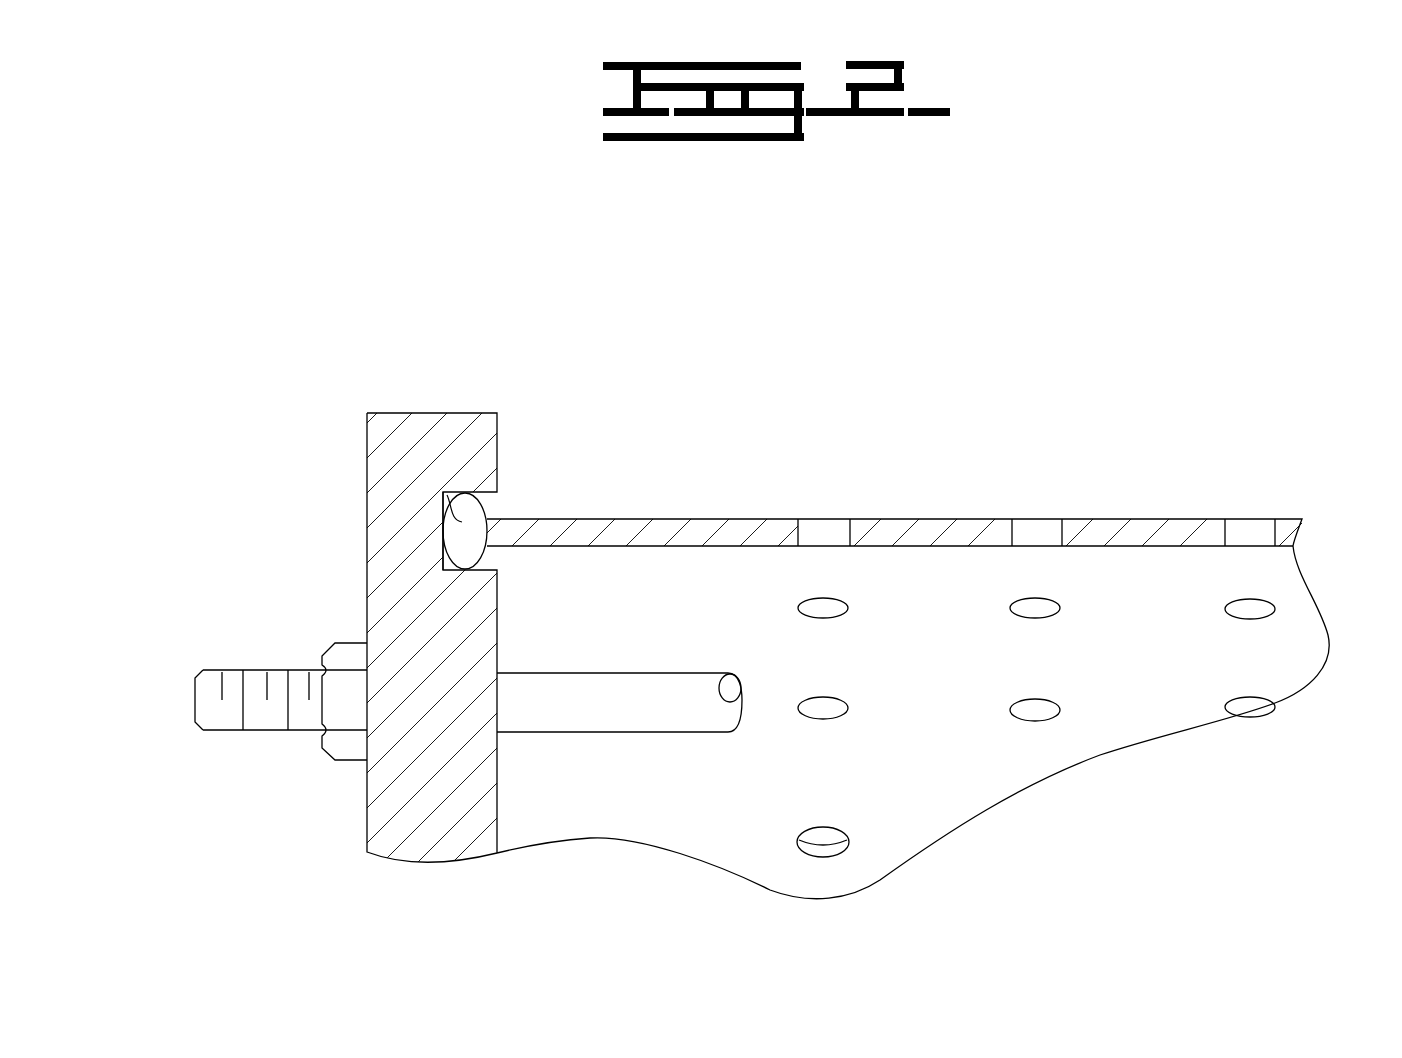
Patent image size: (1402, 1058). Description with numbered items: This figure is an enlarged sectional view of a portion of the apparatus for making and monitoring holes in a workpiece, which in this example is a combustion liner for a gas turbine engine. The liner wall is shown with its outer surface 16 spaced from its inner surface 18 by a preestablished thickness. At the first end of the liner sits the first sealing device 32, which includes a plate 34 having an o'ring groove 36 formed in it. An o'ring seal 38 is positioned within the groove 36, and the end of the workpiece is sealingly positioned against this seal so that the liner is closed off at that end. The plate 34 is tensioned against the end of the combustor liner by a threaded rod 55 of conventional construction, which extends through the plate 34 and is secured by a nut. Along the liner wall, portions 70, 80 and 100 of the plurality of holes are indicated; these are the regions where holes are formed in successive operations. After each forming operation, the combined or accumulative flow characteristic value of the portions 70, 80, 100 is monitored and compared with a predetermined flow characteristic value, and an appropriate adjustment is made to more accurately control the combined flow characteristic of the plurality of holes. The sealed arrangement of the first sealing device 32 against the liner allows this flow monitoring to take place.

The first sealing device 32 is at (380, 362).
The plate 34 is at (460, 779).
The o'ring groove 36 is at (447, 523).
The o'ring seal 38 is at (462, 550).
The outer surface 16 is at (918, 519).
The inner surface 18 is at (580, 547).
The portion of the plurality of holes 70 is at (823, 519).
The portion of the plurality of holes 80 is at (1037, 519).
The portion of the plurality of holes 100 is at (1248, 519).
The threaded rod 55 is at (227, 730).